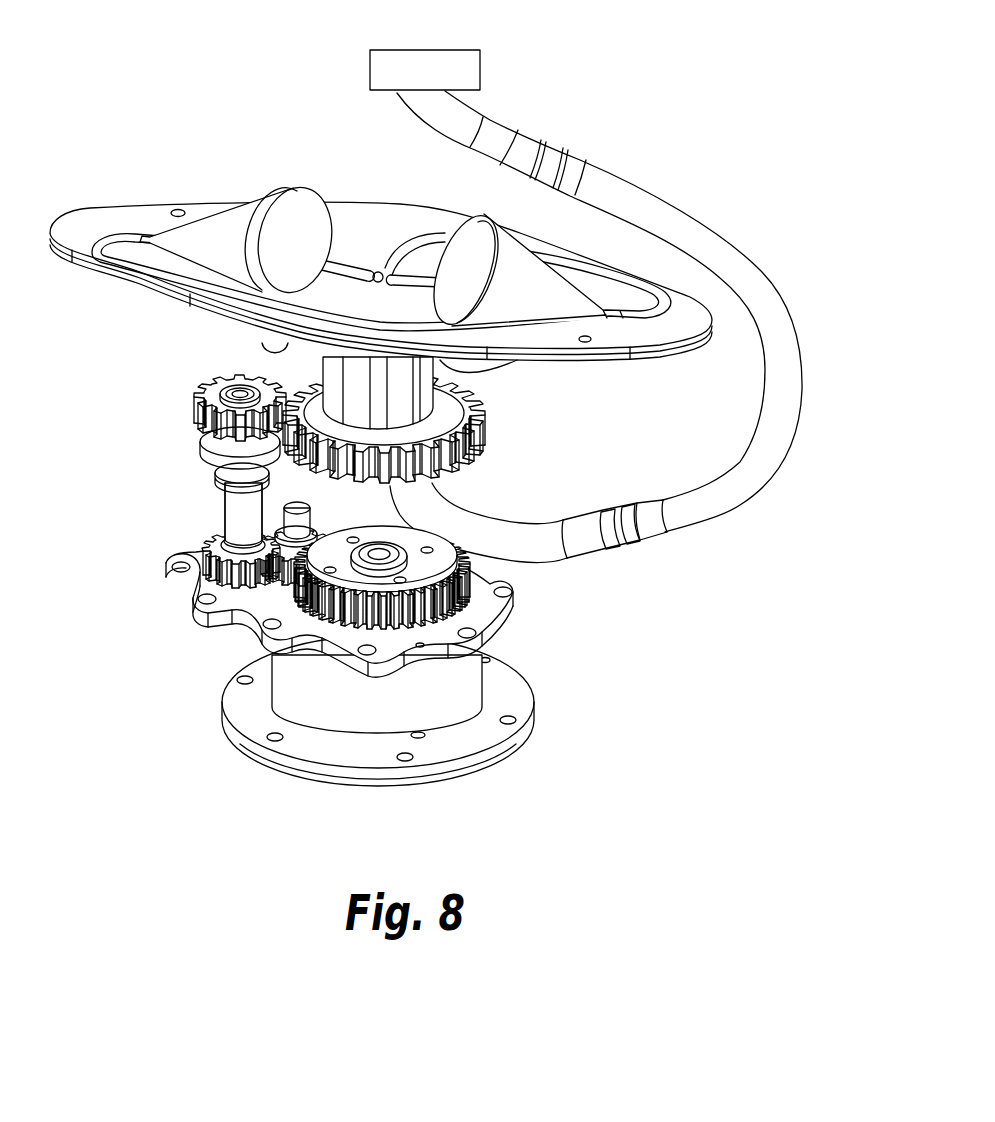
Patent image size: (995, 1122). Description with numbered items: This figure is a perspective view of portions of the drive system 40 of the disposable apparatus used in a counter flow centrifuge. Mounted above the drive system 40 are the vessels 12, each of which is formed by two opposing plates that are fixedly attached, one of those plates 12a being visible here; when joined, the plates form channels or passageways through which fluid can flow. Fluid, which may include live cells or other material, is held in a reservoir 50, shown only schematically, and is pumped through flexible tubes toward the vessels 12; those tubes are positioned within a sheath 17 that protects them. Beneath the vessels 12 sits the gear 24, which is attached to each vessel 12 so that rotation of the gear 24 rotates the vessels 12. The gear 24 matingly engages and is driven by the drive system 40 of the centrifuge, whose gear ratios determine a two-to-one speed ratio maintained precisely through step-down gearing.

The reservoir 50 is at (480, 70).
The sheath 17 is at (626, 197).
The vessel 12 is at (260, 218).
The plate 12a is at (147, 220).
The gear 24 is at (487, 408).
The drive system 40 is at (155, 433).